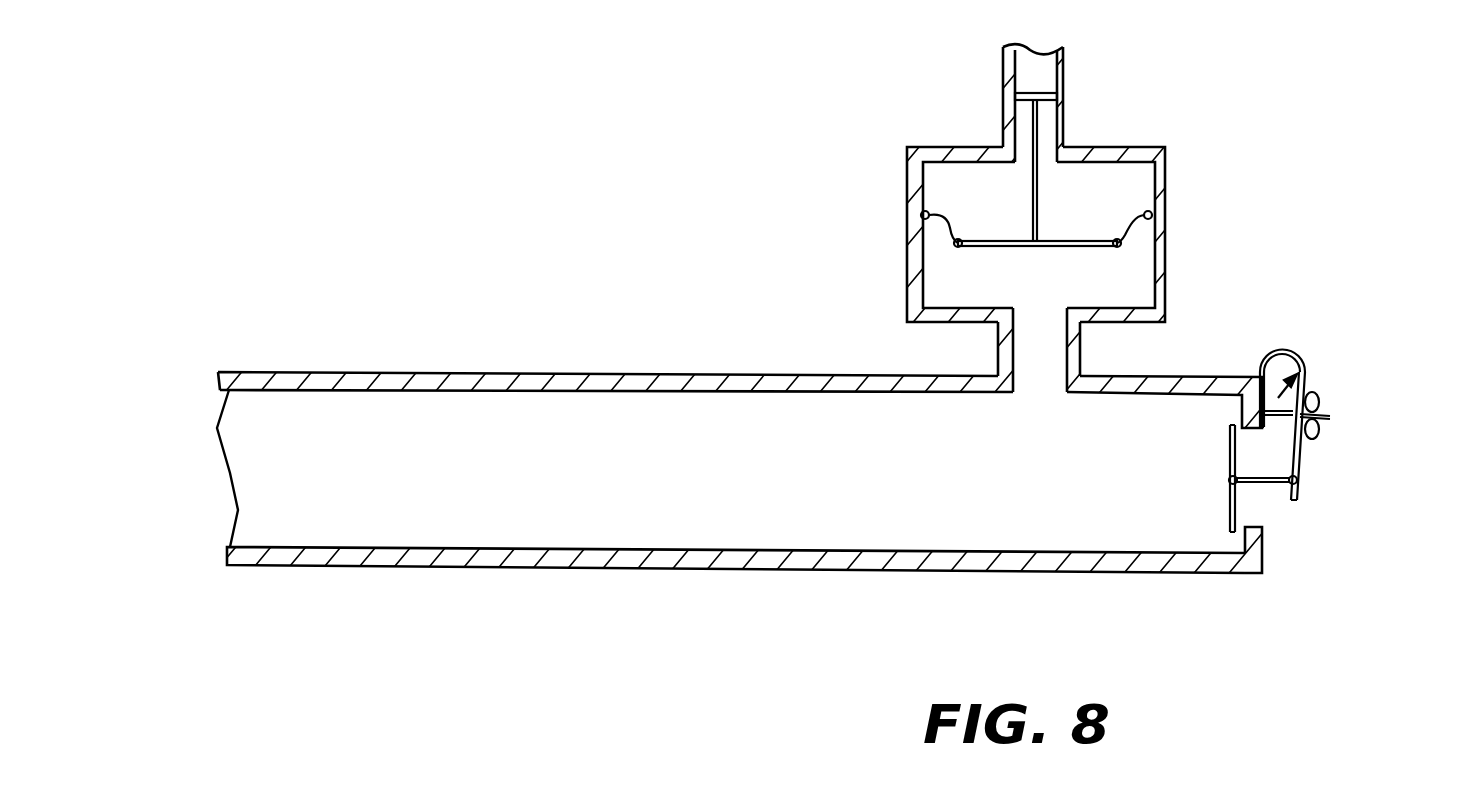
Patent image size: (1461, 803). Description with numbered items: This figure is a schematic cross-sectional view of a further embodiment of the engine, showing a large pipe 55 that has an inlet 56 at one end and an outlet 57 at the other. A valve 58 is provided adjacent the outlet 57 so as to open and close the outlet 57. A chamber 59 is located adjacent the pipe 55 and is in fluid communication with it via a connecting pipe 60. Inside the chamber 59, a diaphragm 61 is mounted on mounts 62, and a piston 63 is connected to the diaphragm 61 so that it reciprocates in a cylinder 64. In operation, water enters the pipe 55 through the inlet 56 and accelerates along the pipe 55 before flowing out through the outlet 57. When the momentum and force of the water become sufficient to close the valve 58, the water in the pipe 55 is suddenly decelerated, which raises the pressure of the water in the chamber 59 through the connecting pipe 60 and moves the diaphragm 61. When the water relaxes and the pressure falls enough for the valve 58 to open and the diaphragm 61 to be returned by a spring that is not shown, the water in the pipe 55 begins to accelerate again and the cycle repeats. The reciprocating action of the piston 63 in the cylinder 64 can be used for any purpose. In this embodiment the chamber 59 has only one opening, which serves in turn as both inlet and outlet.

The pipe 55 is at (529, 556).
The inlet 56 is at (257, 468).
The outlet 57 is at (1260, 508).
The valve 58 is at (1300, 370).
The chamber 59 is at (1125, 281).
The connecting pipe 60 is at (1035, 343).
The diaphragm 61 is at (1090, 243).
The mounts 62 is at (940, 242).
The piston 63 is at (1045, 103).
The cylinder 64 is at (1025, 77).